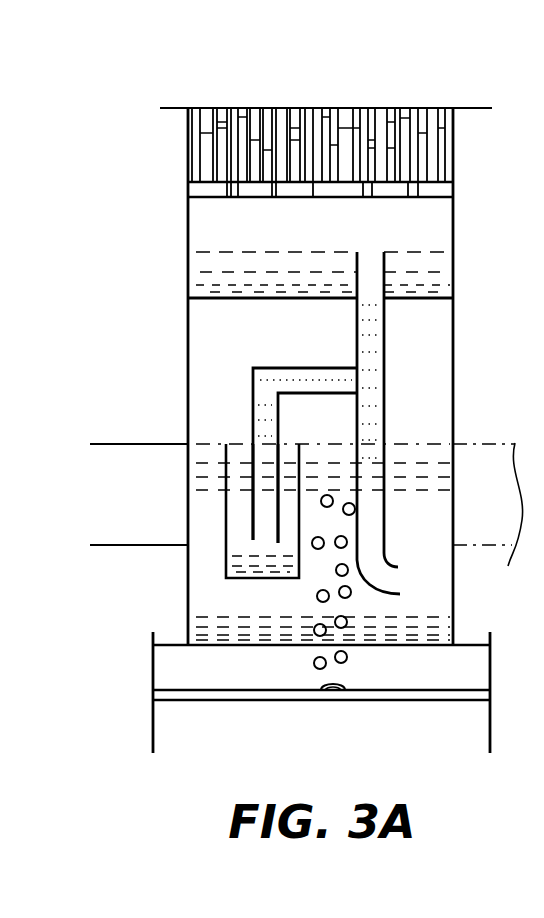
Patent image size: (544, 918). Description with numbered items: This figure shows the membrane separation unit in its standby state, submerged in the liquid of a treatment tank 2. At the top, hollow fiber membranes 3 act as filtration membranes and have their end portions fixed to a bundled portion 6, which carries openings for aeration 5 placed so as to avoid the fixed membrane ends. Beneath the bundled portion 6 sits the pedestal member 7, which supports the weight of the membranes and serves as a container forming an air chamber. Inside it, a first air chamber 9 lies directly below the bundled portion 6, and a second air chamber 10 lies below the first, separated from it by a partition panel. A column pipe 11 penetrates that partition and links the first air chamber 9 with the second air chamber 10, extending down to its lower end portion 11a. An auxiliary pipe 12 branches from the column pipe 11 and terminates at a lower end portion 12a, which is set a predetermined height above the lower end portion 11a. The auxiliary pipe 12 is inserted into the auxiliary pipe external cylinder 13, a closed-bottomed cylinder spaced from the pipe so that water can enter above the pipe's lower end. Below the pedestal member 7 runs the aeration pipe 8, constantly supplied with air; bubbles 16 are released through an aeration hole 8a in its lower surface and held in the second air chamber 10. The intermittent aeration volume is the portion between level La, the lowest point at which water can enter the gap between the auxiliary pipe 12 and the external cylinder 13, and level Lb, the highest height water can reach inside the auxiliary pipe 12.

The treatment tank 2 is at (477, 419).
The hollow fiber membranes 3 is at (425, 143).
The openings for aeration 5 is at (257, 140).
The bundled portion 6 is at (347, 187).
The pedestal member 7 is at (188, 300).
The aeration pipe 8 is at (418, 676).
The aeration hole 8a is at (331, 691).
The first air chamber 9 is at (299, 240).
The second air chamber 10 is at (307, 348).
The column pipe 11 is at (385, 330).
The lower end portion of the column pipe 11a is at (398, 567).
The auxiliary pipe 12 is at (253, 371).
The lower end portion of the auxiliary pipe 12a is at (252, 518).
The auxiliary pipe external cylinder 13 is at (262, 578).
The gas bubbles 16 is at (306, 668).
The level La is at (306, 491).
The level Lb is at (301, 531).